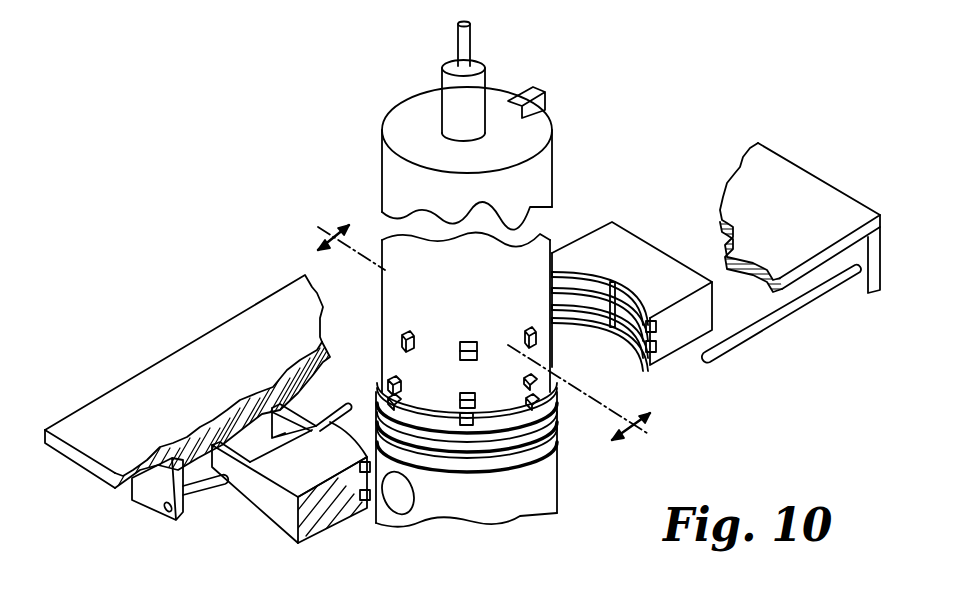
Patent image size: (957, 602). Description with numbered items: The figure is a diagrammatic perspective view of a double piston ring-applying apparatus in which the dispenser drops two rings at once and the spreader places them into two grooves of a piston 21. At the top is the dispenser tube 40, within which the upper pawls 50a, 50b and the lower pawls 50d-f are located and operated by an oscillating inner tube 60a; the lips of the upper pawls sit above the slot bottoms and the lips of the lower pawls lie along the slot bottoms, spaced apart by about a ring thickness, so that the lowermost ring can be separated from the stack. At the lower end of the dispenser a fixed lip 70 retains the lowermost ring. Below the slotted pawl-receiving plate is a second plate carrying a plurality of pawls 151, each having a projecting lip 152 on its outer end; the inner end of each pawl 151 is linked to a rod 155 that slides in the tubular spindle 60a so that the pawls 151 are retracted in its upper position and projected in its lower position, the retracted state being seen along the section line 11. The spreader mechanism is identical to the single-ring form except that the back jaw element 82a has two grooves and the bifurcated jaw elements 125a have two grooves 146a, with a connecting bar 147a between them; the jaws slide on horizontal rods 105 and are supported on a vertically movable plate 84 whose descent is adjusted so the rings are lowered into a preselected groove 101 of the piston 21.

The rod 155 is at (471, 30).
The oscillating inner tube 60a is at (468, 130).
The dispenser tube 40 is at (553, 165).
The piston 21 is at (477, 517).
The groove 101 is at (503, 443).
The upper pawl 50a is at (412, 339).
The upper pawl 50b is at (530, 328).
The lower pawls 50d-f is at (460, 357).
The projecting lip 152 is at (413, 374).
The pawl 151 is at (476, 396).
The fixed lip 70 is at (460, 414).
The section line 11 is at (467, 344).
The horizontal rod 105 is at (203, 497).
The back jaw element 82a is at (296, 543).
The groove 146a is at (582, 288).
The connecting bar 147a is at (622, 282).
The bifurcated jaw element 125a is at (662, 263).
The vertically movable plate 84 is at (848, 198).